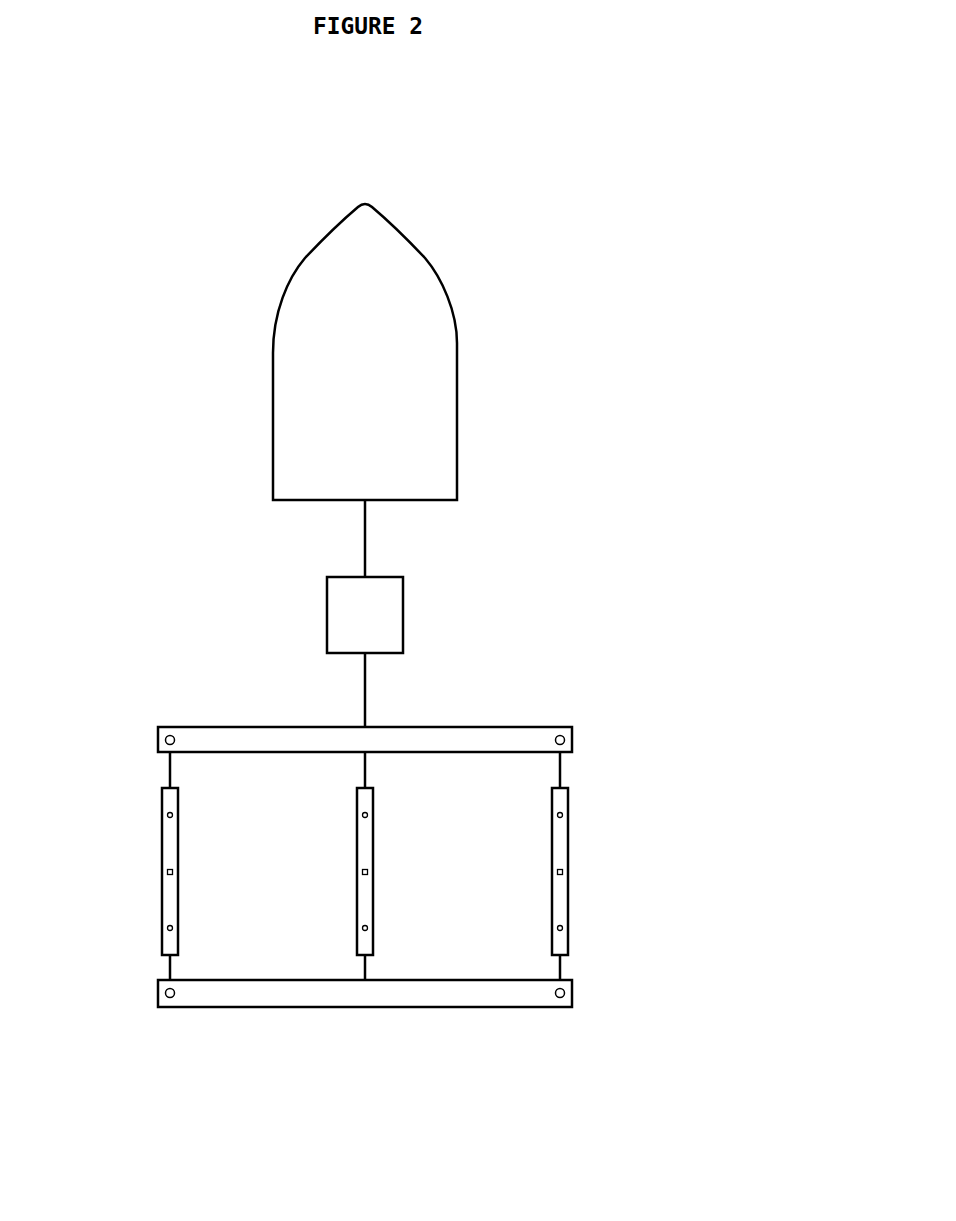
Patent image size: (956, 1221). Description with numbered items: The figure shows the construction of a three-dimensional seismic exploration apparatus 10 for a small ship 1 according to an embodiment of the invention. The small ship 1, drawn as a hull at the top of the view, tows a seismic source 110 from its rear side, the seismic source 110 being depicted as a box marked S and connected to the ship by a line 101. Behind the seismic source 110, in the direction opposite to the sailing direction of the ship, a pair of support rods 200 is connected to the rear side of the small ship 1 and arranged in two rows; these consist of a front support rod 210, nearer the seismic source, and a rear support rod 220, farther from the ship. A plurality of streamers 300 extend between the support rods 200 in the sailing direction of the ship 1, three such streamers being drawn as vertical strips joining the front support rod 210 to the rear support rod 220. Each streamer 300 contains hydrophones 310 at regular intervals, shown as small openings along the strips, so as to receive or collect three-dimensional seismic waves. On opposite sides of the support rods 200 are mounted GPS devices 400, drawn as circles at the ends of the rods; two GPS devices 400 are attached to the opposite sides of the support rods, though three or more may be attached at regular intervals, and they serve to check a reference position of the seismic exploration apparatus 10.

The 3D seismic exploration apparatus 10 is at (184, 246).
The small ship 1 is at (452, 304).
The mooring line 101 is at (366, 537).
The seismic source 110 is at (327, 615).
The support rods 200 is at (568, 646).
The front support rod 210 is at (432, 727).
The rear support rod 220 is at (431, 980).
The streamers 300 is at (162, 888).
The hydrophones 310 is at (168, 815).
The GPS devices 400 is at (163, 740).